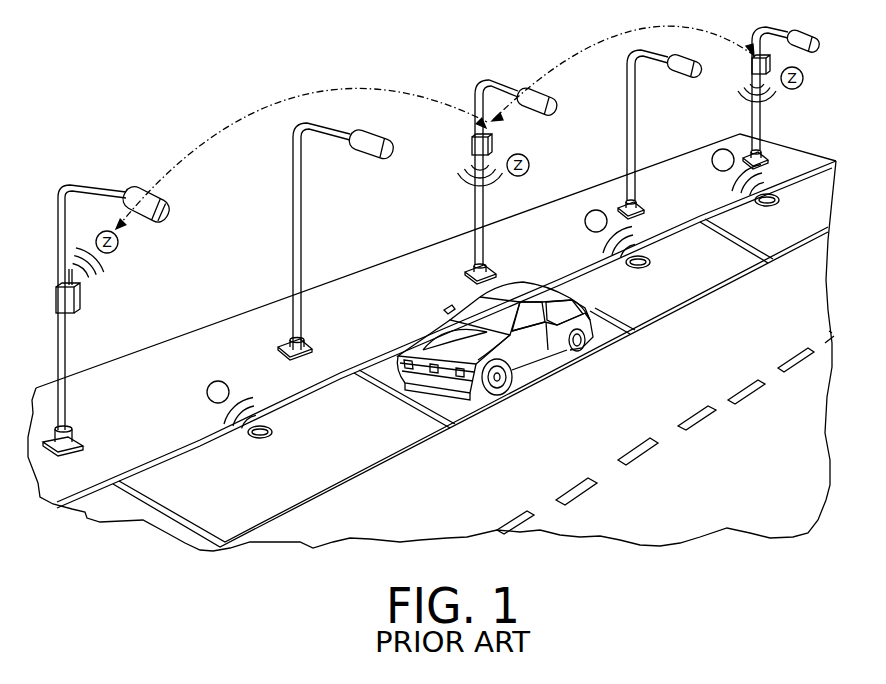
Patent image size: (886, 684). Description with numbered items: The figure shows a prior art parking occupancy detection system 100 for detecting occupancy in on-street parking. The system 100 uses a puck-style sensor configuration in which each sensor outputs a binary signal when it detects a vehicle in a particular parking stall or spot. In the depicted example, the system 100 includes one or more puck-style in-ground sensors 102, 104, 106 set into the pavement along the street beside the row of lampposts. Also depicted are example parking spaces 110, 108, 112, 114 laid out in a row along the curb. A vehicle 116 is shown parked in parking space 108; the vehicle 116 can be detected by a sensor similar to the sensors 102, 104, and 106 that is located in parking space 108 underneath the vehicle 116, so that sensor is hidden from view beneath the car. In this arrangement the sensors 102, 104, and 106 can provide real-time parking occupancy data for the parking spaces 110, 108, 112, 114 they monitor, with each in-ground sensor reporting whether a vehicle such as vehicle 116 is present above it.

The parking occupancy detection system 100 is at (388, 64).
The puck-style in-ground sensor 102 is at (746, 210).
The puck-style in-ground sensor 104 is at (665, 262).
The puck-style in-ground sensor 106 is at (290, 428).
The parking space 108 is at (465, 408).
The parking space 110 is at (248, 512).
The parking space 112 is at (663, 300).
The parking space 114 is at (787, 240).
The vehicle 116 is at (466, 304).